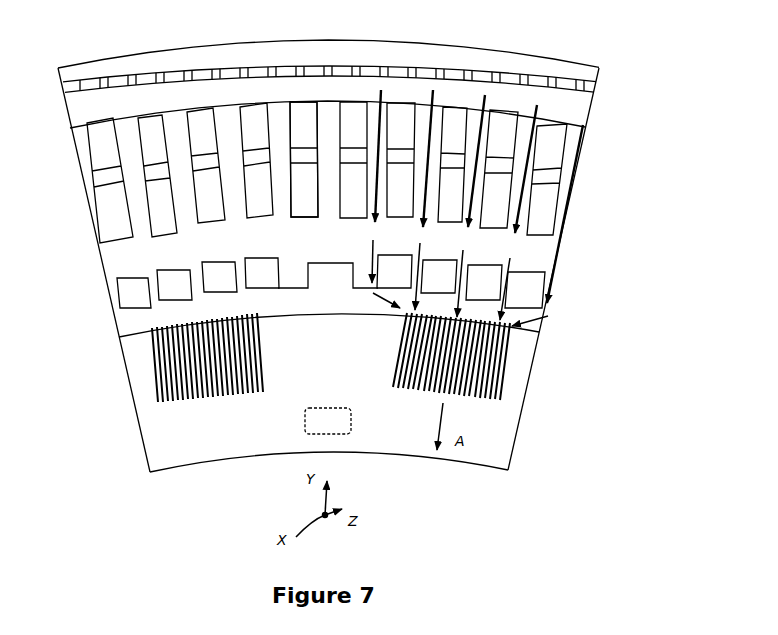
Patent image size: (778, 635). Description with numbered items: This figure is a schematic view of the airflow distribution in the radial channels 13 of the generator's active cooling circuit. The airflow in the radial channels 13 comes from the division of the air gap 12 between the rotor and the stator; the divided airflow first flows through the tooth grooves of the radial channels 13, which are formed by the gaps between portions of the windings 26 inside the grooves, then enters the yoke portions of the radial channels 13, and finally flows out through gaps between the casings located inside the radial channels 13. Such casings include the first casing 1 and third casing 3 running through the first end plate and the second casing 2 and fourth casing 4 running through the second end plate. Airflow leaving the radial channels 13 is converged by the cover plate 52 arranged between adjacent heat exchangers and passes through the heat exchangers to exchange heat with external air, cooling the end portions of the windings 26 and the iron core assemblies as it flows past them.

The first casing 1 is at (318, 256).
The second casing 2 is at (114, 300).
The third casing 3 is at (289, 365).
The fourth casing 4 is at (153, 372).
The air gap 12 is at (337, 94).
The radial channels 13 is at (243, 204).
The winding 26 is at (310, 198).
The cover plate 52 is at (327, 318).